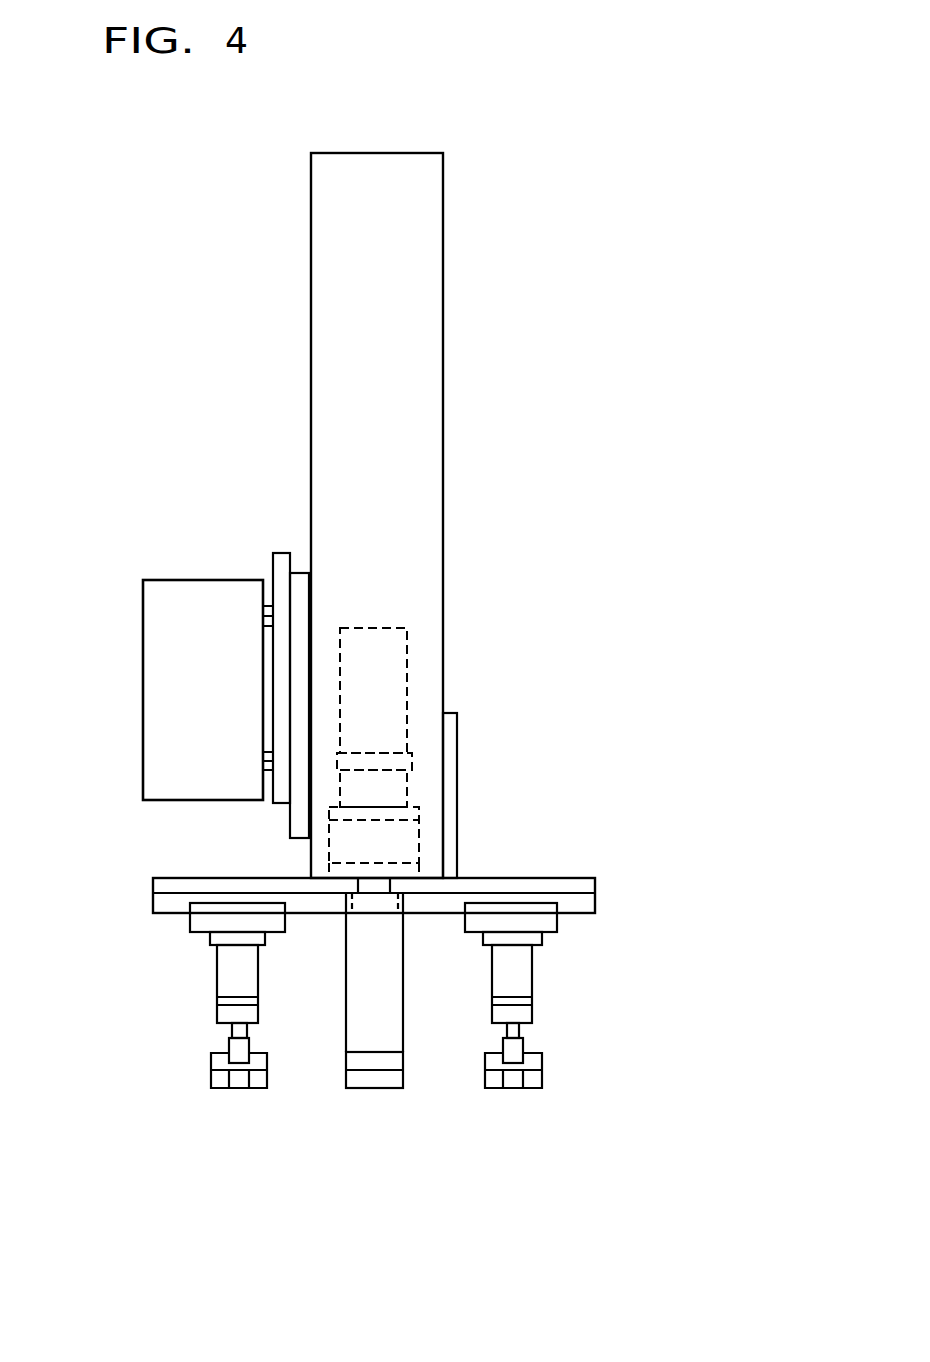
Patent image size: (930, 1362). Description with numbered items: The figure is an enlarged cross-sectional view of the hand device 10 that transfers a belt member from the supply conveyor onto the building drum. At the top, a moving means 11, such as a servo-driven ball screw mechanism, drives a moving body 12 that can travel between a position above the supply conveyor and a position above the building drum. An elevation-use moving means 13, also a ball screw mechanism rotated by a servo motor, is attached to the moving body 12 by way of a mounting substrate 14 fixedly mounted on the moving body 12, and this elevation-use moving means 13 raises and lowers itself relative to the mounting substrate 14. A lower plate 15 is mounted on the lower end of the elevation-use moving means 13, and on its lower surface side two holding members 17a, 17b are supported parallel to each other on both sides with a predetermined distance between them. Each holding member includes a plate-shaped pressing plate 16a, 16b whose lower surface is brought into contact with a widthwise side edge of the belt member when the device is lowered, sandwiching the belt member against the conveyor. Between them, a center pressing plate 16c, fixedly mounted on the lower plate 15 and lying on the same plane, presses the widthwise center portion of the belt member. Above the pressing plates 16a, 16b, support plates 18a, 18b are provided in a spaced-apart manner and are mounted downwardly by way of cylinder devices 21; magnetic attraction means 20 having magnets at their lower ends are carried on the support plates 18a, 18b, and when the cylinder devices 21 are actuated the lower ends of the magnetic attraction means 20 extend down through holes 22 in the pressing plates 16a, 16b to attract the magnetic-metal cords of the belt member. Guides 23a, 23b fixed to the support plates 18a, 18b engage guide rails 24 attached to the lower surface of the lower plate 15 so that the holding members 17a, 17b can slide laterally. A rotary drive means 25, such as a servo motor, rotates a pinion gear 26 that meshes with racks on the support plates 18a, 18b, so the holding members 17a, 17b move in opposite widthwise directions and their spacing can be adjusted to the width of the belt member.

The hand device 10 is at (571, 311).
The moving means 11 is at (165, 657).
The moving body 12 is at (283, 710).
The elevation-use moving means 13 is at (436, 449).
The mounting substrate 14 is at (298, 658).
The lower plate 15 is at (503, 887).
The pressing plate 16a is at (211, 1082).
The pressing plate 16b is at (533, 1088).
The pressing plate 16c is at (367, 1080).
The holding member 17a is at (250, 1097).
The holding member 17b is at (495, 1098).
The support plate 18a is at (215, 942).
The support plate 18b is at (542, 942).
The magnetic attraction means 20 is at (229, 1040).
The cylinder device 21 is at (221, 967).
The hole 22 is at (237, 1083).
The guide 23a is at (190, 927).
The guide 23b is at (542, 937).
The guide rail 24 is at (433, 905).
The rotary drive means 25 is at (382, 700).
The pinion gear 26 is at (388, 903).